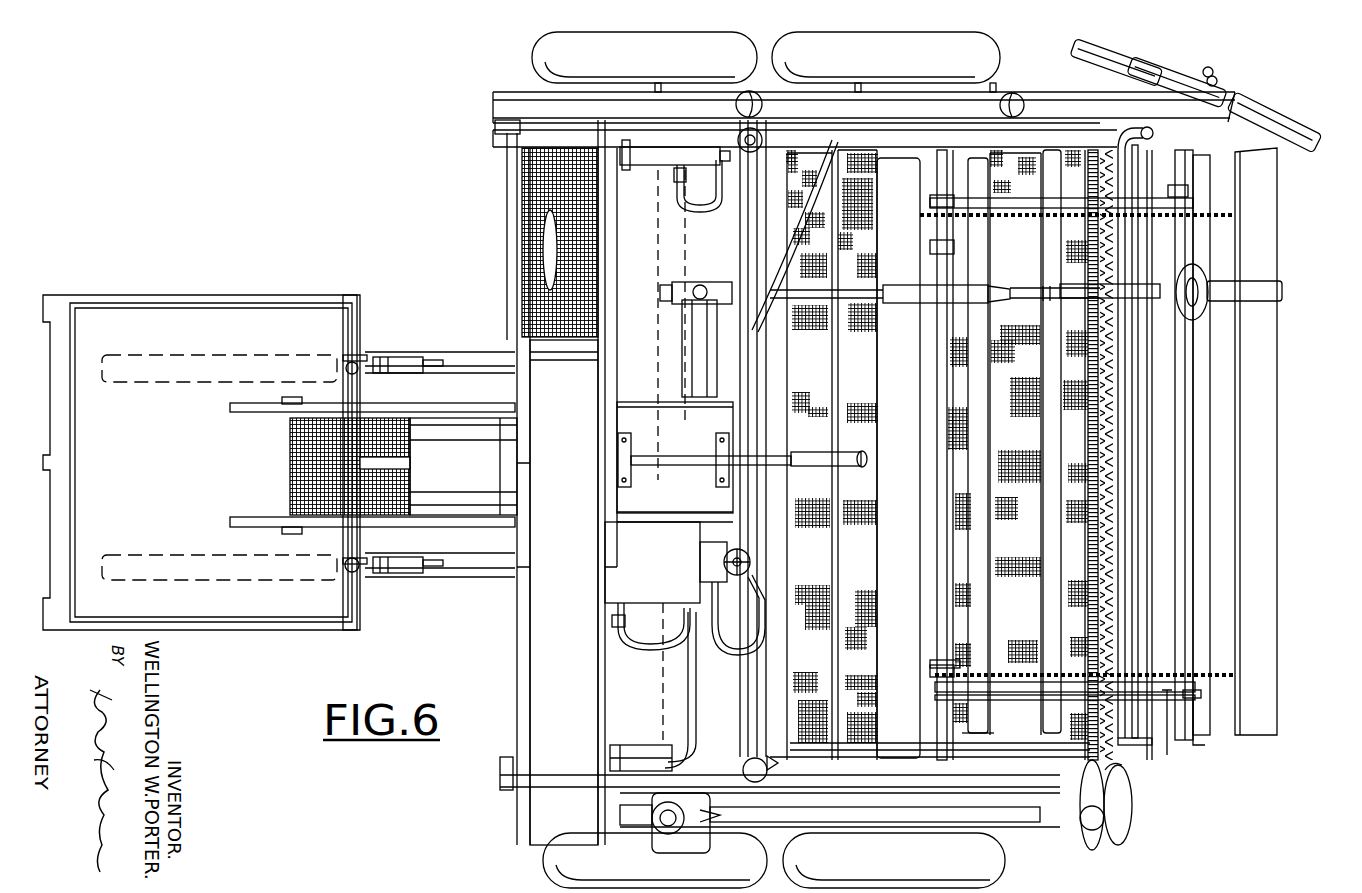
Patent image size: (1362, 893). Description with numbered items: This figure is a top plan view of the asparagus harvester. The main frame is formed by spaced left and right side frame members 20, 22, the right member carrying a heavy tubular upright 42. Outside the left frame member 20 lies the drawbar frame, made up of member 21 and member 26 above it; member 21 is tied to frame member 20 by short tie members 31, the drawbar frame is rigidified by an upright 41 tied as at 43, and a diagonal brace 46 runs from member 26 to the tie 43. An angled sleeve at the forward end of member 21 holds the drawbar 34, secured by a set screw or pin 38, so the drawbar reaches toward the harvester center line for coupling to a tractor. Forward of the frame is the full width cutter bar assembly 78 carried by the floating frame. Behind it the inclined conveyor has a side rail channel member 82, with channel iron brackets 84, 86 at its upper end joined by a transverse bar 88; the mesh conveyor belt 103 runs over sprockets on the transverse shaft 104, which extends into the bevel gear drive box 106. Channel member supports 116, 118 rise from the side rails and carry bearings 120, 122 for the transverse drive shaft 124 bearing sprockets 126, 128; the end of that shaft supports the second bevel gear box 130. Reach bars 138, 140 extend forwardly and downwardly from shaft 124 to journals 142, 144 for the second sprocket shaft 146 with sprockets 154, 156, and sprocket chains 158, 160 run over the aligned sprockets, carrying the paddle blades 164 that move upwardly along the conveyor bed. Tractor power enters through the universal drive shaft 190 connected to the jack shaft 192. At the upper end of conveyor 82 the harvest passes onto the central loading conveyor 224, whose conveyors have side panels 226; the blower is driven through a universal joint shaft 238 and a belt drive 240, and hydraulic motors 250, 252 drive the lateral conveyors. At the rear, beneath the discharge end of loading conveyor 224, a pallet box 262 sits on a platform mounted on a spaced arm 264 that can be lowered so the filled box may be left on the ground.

The left side frame member 20 is at (495, 150).
The draw bar frame member 21 is at (495, 97).
The right side frame member 22 is at (497, 767).
The draw bar frame member 26 is at (1063, 93).
The short tie members 31 is at (500, 128).
The drawbar 34 is at (1265, 120).
The set screw or pin 38 is at (1210, 68).
The upright 41 is at (752, 90).
The heavy tubular upright 42 is at (748, 758).
The tie 43 is at (745, 128).
The diagonal brace 46 is at (845, 105).
The cutter bar assembly 78 is at (1125, 550).
The channel member 82 is at (1032, 440).
The channel iron bracket 84 is at (870, 140).
The channel iron bracket 86 is at (863, 747).
The transverse bar 88 is at (833, 367).
The conveyor belt 103 is at (858, 535).
The transverse shaft 104 is at (655, 245).
The bevel gear drive box 106 is at (680, 848).
The channel member support 116 is at (1037, 140).
The channel member support 118 is at (1043, 752).
The bearing 120 is at (937, 135).
The bearing 122 is at (937, 750).
The transverse drive shaft 124 is at (945, 568).
The sprocket 126 is at (947, 223).
The sprocket 128 is at (963, 667).
The second bevel gear box 130 is at (962, 835).
The reach bar 138 is at (1097, 200).
The reach bar 140 is at (1165, 693).
The journal 142 is at (1175, 190).
The journal 144 is at (1193, 693).
The second sprocket shaft 146 is at (1185, 405).
The sprocket 154 is at (1223, 208).
The sprocket 156 is at (1228, 670).
The sprocket chain 158 is at (1017, 220).
The sprocket chain 160 is at (1020, 675).
The blades 164 is at (1200, 427).
The universal drive shaft 190 is at (1245, 283).
The jack shaft 192 is at (1187, 330).
The loading conveyor 224 is at (312, 495).
The side panels 226 is at (210, 578).
The universal joint shaft 238 is at (888, 283).
The belt drive 240 is at (740, 327).
The hydraulic motor 250 is at (647, 168).
The hydraulic motor 252 is at (650, 740).
The pallet box 262 is at (350, 632).
The arm 264 is at (331, 355).